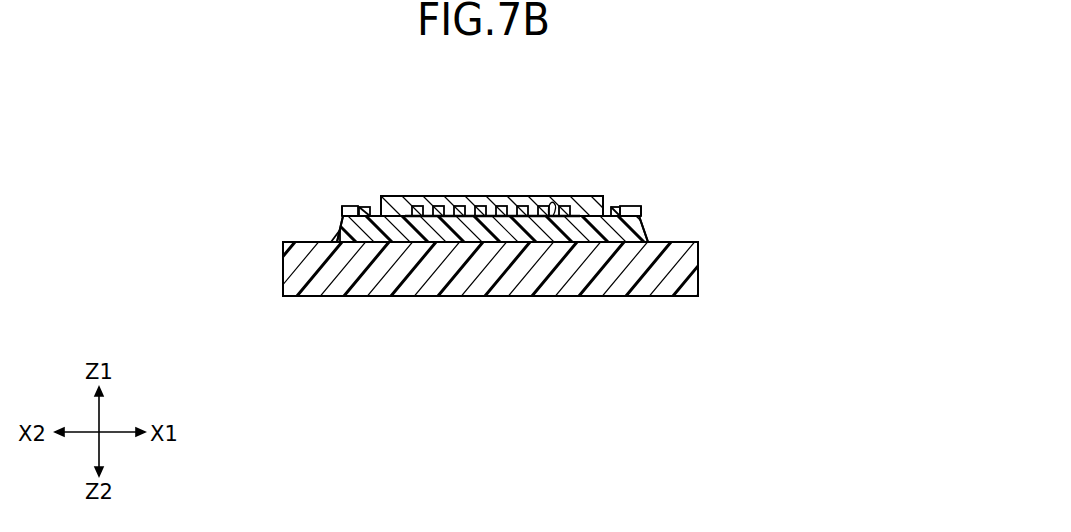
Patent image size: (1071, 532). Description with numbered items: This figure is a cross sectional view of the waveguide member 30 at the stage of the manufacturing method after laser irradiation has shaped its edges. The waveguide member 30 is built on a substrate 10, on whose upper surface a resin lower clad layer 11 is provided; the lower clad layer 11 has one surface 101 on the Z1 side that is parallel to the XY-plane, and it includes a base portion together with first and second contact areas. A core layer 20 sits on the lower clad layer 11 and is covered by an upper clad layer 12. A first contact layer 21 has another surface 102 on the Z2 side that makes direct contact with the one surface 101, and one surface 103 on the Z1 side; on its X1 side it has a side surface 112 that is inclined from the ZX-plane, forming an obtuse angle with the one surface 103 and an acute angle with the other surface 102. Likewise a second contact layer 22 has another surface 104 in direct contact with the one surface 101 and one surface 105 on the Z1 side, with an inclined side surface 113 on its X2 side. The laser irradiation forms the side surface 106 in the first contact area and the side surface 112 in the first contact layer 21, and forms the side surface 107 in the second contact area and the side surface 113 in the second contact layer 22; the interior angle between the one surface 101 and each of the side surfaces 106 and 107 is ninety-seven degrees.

The substrate 10 is at (458, 268).
The lower clad layer 11 is at (486, 228).
The upper clad layer 12 is at (492, 213).
The core layer 20 is at (437, 207).
The first contact layer 21 is at (617, 209).
The second contact layer 22 is at (363, 207).
The waveguide member 30 is at (407, 178).
The one surface of the lower clad layer 101 is at (553, 216).
The other surface of the first contact layer 102 is at (631, 217).
The one surface of the first contact layer 103 is at (629, 206).
The other surface of the second contact layer 104 is at (351, 216).
The one surface of the second contact layer 105 is at (352, 206).
The side surface of the first contact area 106 is at (645, 231).
The side surface of the second contact area 107 is at (340, 230).
The side surface of the first contact layer 112 is at (642, 211).
The side surface of the second contact layer 113 is at (342, 206).